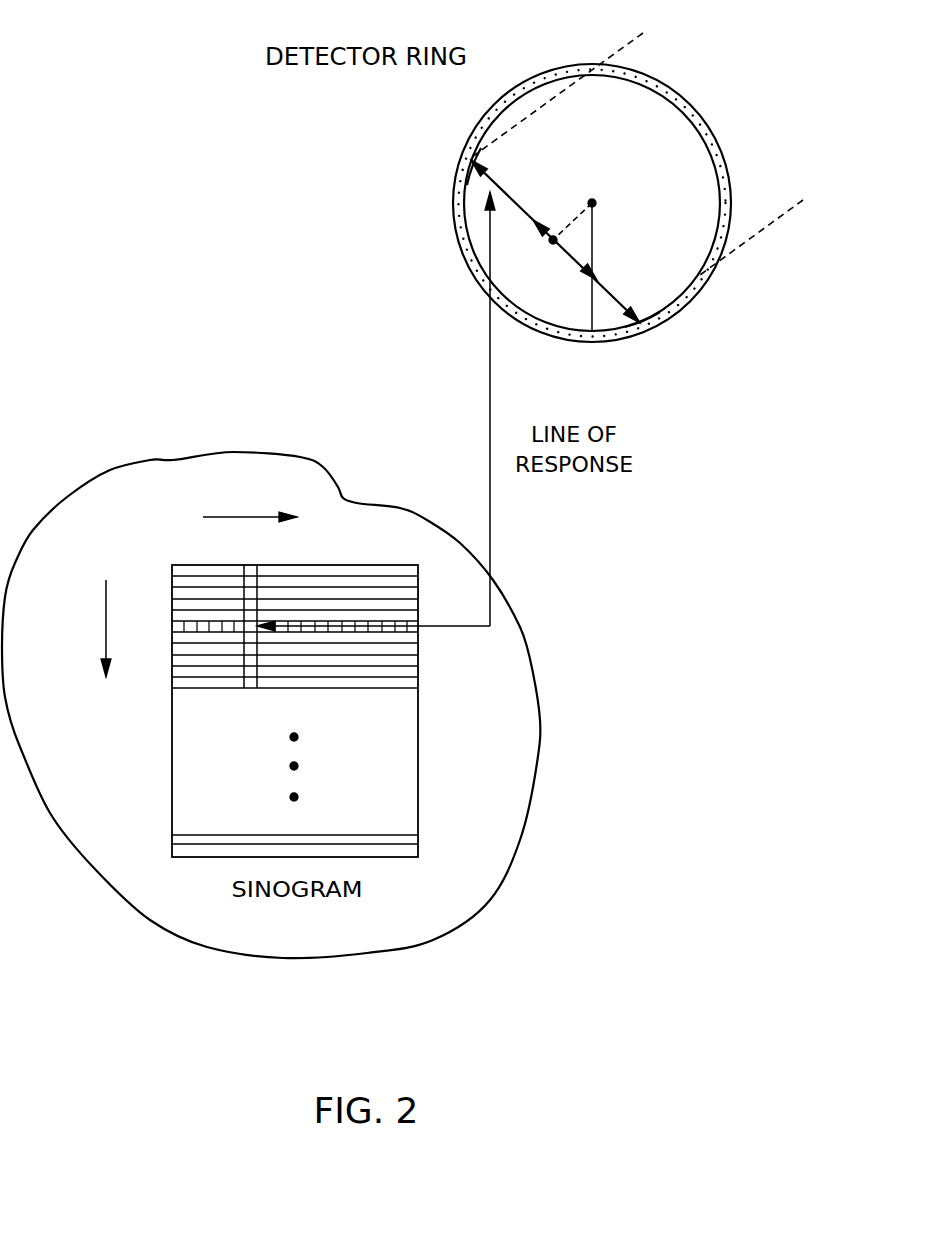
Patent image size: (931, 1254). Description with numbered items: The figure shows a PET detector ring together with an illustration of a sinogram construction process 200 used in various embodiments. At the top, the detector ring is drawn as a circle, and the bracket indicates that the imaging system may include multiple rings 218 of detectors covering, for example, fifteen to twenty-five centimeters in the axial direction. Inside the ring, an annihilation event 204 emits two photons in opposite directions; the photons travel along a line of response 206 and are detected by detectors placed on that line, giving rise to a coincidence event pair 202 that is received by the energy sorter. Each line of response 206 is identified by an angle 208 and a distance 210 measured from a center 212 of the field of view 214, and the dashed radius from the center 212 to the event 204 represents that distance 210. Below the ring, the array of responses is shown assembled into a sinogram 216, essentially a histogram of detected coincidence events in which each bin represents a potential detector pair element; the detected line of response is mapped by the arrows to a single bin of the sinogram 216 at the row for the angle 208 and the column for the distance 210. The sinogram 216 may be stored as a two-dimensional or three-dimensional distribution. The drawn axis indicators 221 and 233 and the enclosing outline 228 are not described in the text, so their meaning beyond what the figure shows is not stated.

The sinogram construction process 200 is at (112, 33).
The coincidence event pair 202 is at (640, 176).
The annihilation event 204 is at (553, 242).
The line of response 206 is at (478, 186).
The angle (θ) 208 is at (577, 248).
The distance (r) 210 is at (568, 230).
The center 212 is at (597, 201).
The field of view 214 is at (675, 282).
The sinogram 216 is at (267, 910).
The rings of detectors 218 is at (730, 225).
The theta axis 221 is at (103, 630).
The sinogram region outline 228 is at (173, 460).
The r axis 233 is at (233, 513).